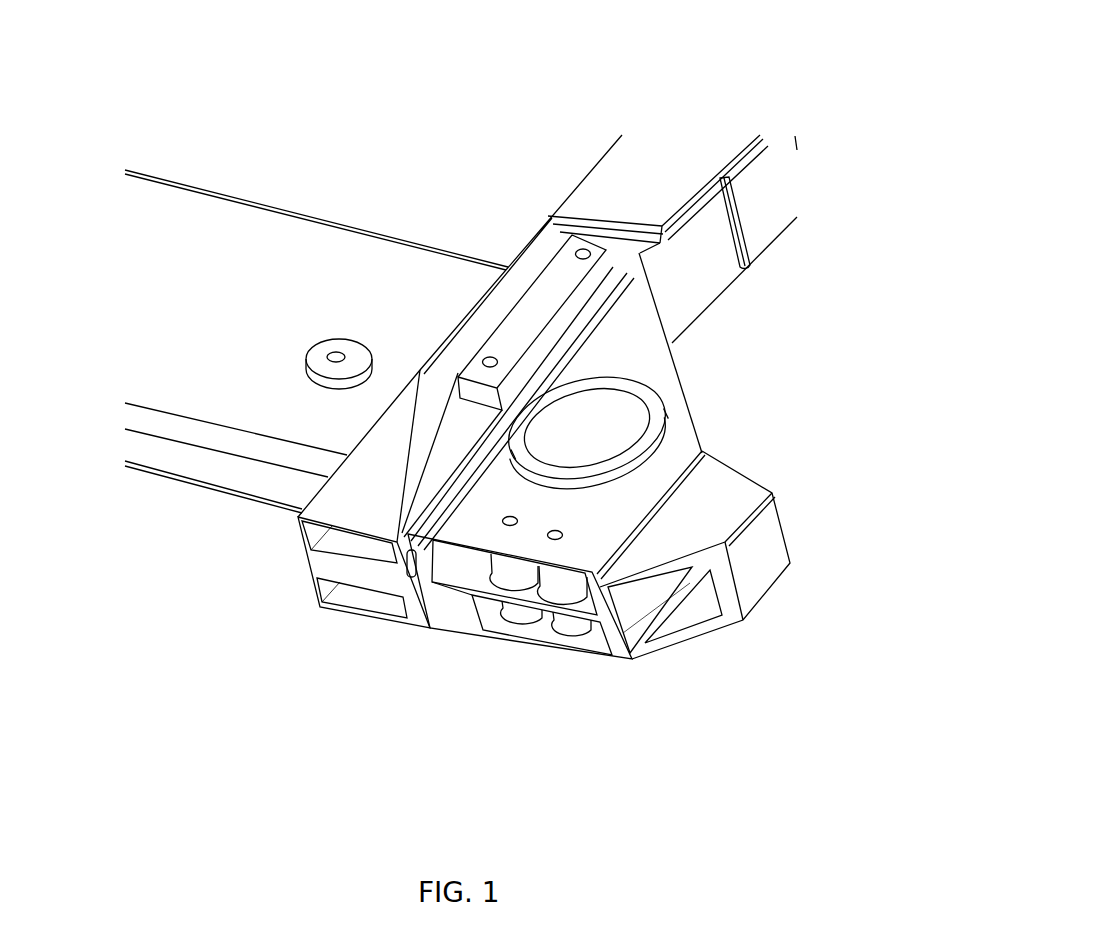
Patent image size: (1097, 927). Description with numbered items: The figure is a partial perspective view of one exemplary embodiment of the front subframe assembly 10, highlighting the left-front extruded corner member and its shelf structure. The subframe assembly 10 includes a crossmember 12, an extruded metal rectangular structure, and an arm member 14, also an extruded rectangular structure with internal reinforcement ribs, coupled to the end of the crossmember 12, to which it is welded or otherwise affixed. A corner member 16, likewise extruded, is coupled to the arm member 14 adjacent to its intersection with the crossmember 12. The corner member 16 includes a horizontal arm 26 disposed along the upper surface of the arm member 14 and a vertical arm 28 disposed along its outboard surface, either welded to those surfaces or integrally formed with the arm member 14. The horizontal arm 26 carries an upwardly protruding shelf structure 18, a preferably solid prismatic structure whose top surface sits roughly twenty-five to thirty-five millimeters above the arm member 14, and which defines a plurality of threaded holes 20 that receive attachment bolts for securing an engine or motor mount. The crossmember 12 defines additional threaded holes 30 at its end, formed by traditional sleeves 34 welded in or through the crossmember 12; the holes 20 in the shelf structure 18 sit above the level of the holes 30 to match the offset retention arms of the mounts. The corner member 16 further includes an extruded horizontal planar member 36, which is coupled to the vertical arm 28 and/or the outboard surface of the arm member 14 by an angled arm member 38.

The subframe assembly 10 is at (400, 208).
The crossmember 12 is at (330, 208).
The arm member 14 is at (348, 433).
The corner member 16 is at (632, 306).
The shelf structure 18 is at (526, 297).
The threaded holes 20 is at (575, 238).
The horizontal arm 26 is at (482, 315).
The vertical arm 28 is at (386, 580).
The additional threaded holes 30 is at (330, 350).
The sleeves 34 is at (302, 338).
The horizontal planar member 36 is at (590, 524).
The angled arm member 38 is at (438, 597).